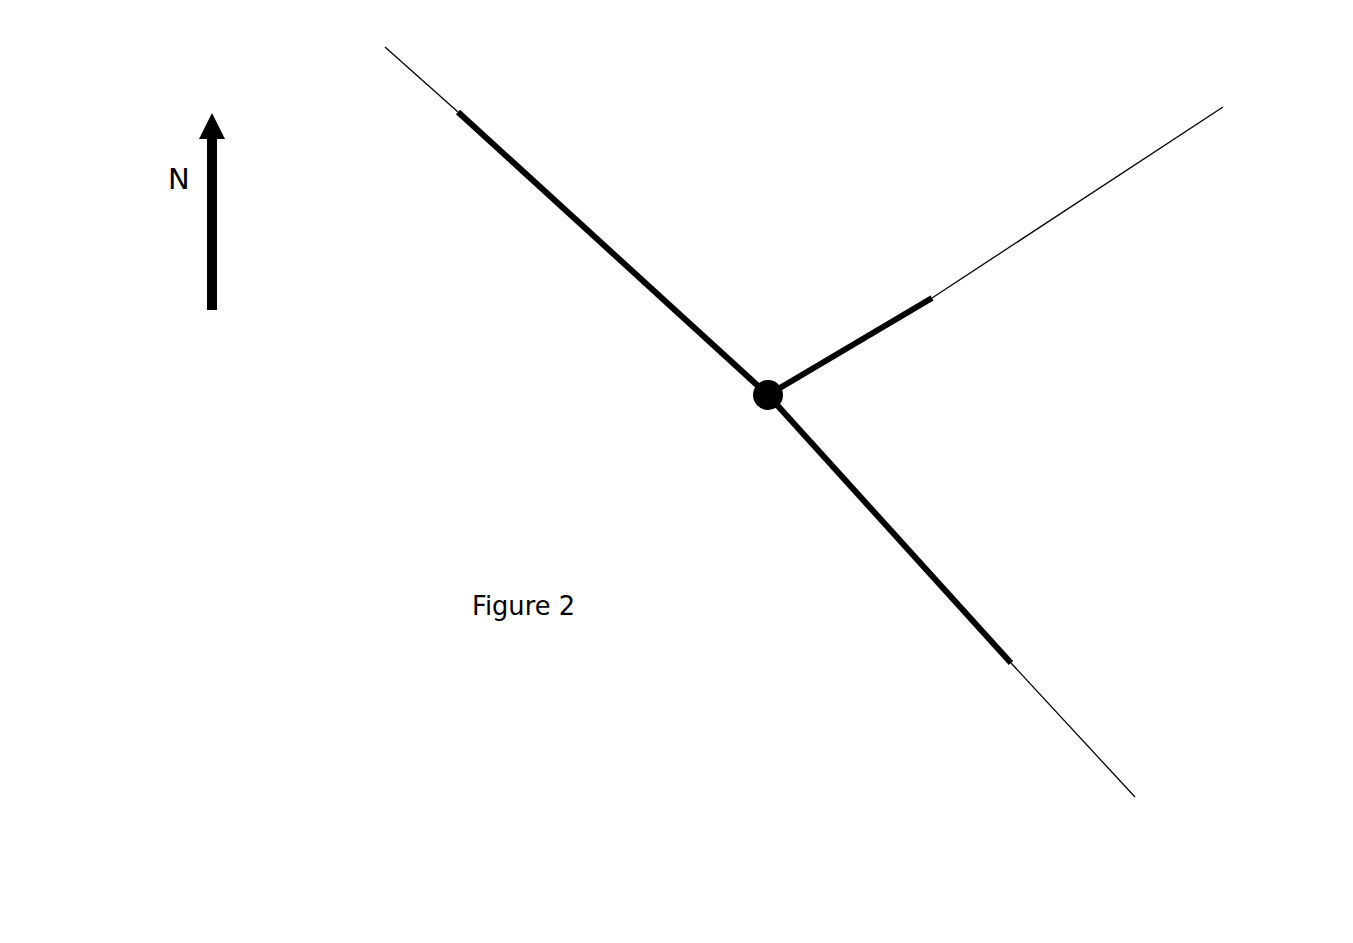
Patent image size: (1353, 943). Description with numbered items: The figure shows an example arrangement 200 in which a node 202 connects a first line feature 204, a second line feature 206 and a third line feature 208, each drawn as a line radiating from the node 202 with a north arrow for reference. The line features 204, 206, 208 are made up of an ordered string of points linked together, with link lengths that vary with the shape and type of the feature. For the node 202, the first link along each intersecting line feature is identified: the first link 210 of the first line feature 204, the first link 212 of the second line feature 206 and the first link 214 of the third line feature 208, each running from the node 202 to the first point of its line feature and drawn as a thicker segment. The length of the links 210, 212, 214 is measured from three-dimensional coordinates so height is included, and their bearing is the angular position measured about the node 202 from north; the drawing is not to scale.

The example arrangement 200 is at (1157, 600).
The node 202 is at (784, 402).
The first line feature 204 is at (1096, 190).
The second line feature 206 is at (1060, 718).
The third line feature 208 is at (438, 97).
The first link of the first line feature 210 is at (893, 328).
The first link of the second line feature 212 is at (903, 552).
The first link of the third line feature 214 is at (665, 312).